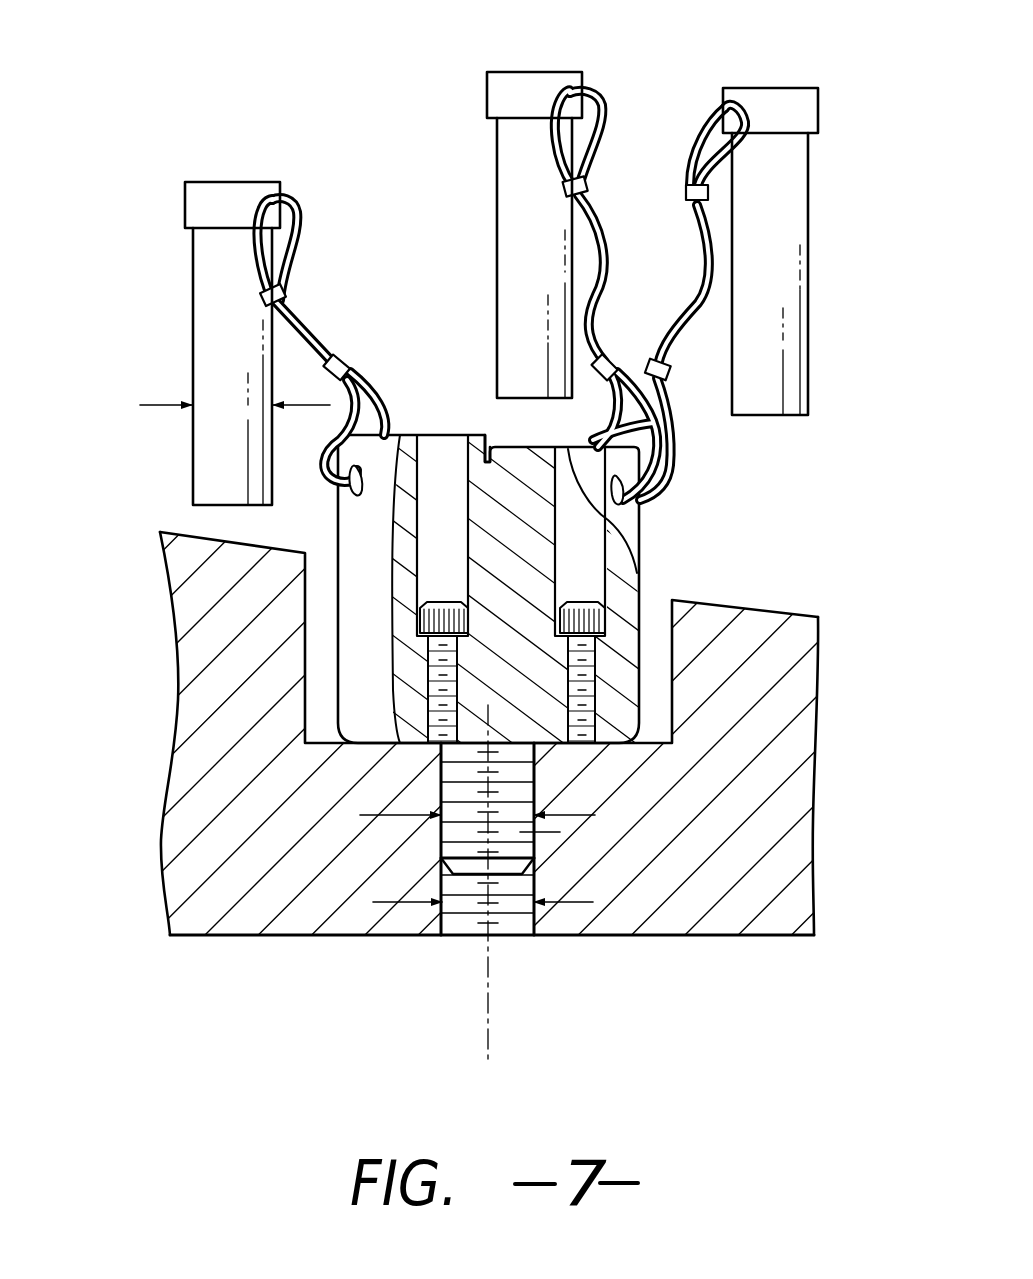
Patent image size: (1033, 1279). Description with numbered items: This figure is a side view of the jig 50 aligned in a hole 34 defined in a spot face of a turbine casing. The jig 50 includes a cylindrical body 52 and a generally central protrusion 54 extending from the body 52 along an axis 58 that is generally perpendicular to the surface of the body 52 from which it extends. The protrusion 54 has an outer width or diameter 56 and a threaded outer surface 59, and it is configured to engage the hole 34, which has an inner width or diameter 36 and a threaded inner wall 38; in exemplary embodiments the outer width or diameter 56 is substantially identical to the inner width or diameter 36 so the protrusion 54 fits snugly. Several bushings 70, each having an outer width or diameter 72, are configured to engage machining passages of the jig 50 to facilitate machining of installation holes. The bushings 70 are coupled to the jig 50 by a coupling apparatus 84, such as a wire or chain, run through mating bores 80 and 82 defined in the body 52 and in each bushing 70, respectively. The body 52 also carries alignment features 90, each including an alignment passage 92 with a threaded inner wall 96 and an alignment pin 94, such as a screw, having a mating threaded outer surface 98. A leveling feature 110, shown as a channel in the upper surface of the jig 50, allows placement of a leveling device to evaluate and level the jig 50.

The hole 34 is at (465, 945).
The inner width or diameter 36 is at (583, 900).
The threaded inner wall 38 is at (515, 907).
The jig 50 is at (438, 275).
The body 52 is at (641, 553).
The protrusion 54 is at (440, 849).
The outer width or diameter 56 is at (400, 815).
The axis 58 is at (490, 1035).
The threaded outer surface 59 is at (520, 832).
The bushing 70 is at (178, 250).
The outer width or diameter 72 is at (148, 402).
The mating bore 80 is at (352, 495).
The mating bore 82 is at (288, 192).
The coupling apparatus 84 is at (302, 330).
The alignment feature 90 is at (418, 415).
The alignment passage 92 is at (445, 475).
The alignment pin 94 is at (438, 600).
The threaded inner wall 96 is at (432, 718).
The threaded outer surface 98 is at (430, 670).
The leveling feature 110 is at (492, 440).